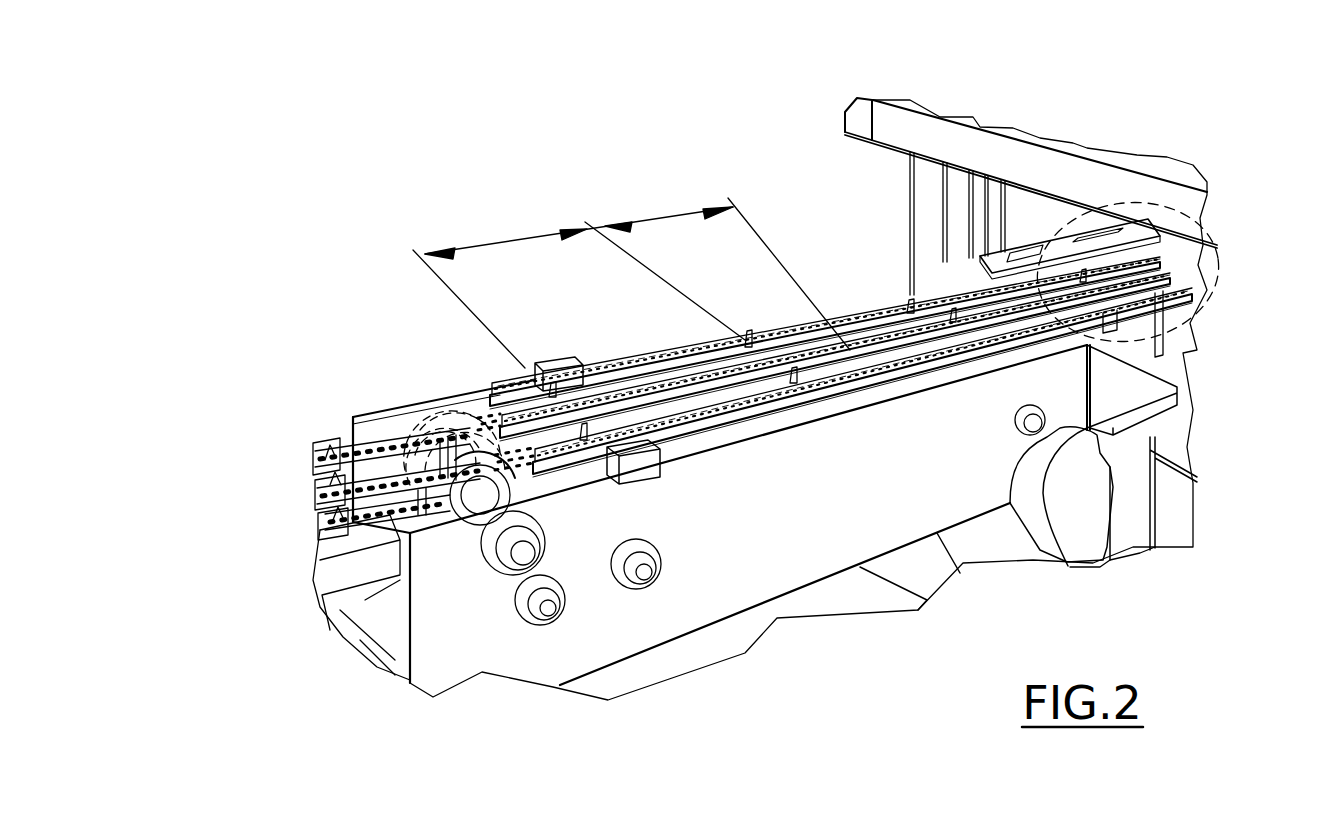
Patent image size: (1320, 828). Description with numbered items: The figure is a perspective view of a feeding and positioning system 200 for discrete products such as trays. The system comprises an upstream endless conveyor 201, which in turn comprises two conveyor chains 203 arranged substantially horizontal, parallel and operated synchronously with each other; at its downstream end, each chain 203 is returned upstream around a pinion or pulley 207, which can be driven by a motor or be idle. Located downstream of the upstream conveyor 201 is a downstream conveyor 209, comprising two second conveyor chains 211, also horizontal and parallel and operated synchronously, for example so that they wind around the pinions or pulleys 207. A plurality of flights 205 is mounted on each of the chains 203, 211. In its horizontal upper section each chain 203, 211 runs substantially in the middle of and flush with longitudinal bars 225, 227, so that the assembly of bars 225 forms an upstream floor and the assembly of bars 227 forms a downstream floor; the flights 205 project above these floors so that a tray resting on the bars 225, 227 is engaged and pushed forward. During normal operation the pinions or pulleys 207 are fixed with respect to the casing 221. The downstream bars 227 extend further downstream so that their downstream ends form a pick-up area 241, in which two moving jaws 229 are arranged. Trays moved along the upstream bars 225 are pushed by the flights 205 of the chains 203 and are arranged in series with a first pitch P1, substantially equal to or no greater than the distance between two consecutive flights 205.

The feeding and positioning system 200 is at (690, 262).
The upstream endless conveyor 201 is at (384, 358).
The conveyor chains 203 is at (343, 445).
The flights 205 is at (800, 347).
The pinion or pulley 207 is at (545, 515).
The downstream conveyor 209 is at (755, 300).
The second conveyor chains 211 is at (783, 350).
The casing 221 is at (935, 537).
The longitudinal bars 225 is at (330, 447).
The longitudinal bars 227 is at (1087, 268).
The moving jaws 229 is at (1040, 240).
The pick-up area 241 is at (1217, 275).
The first pitch P1 is at (488, 237).